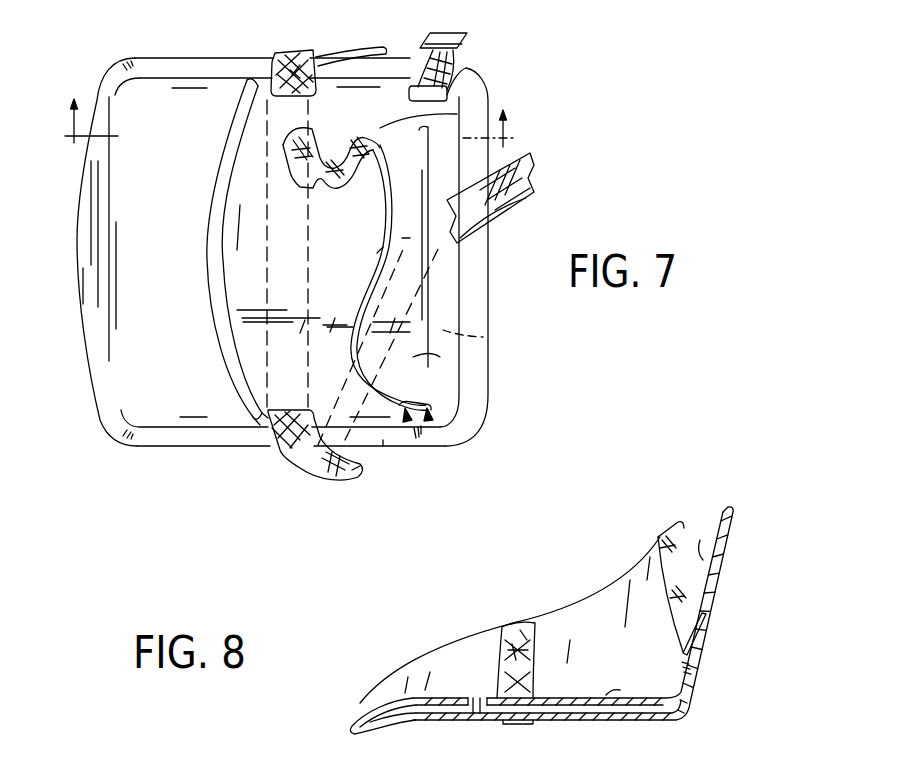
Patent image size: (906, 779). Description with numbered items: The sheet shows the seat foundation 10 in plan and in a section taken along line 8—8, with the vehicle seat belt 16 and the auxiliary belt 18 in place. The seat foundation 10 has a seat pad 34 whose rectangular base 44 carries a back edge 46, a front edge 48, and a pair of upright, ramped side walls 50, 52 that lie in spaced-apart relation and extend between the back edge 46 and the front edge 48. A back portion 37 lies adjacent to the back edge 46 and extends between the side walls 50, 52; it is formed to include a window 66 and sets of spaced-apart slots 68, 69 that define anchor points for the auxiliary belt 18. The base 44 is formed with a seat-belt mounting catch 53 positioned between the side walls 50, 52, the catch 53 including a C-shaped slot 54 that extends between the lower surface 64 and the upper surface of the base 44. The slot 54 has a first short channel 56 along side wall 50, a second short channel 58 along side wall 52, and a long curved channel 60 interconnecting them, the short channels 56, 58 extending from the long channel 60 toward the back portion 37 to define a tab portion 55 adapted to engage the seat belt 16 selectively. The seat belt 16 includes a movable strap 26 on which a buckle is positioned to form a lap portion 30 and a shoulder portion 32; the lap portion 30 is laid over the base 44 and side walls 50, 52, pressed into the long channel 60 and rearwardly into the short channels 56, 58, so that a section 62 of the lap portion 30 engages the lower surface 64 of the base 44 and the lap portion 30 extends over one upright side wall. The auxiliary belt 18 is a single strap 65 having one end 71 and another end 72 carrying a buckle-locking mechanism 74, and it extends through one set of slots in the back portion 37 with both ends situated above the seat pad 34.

In FIG. 7, the seat foundation 10 is at (128, 468).
In FIG. 8, the seat foundation 10 is at (343, 665).
In FIG. 7, the vehicle seat belt 16 is at (338, 490).
In FIG. 7, the auxiliary belt 18 is at (410, 240).
In FIG. 8, the auxiliary belt 18 is at (667, 512).
In FIG. 7, the movable strap 26 is at (290, 60).
In FIG. 8, the movable strap 26 is at (500, 640).
In FIG. 7, the lap portion 30 is at (300, 64).
In FIG. 8, the lap portion 30 is at (533, 603).
In FIG. 7, the shoulder portion 32 is at (533, 183).
In FIG. 7, the seat pad 34 is at (120, 183).
In FIG. 8, the seat pad 34 is at (421, 682).
In FIG. 7, the back portion 37 is at (447, 283).
In FIG. 8, the back portion 37 is at (707, 543).
In FIG. 7, the rectangular base 44 is at (462, 104).
In FIG. 8, the rectangular base 44 is at (606, 695).
In FIG. 7, the back edge 46 is at (415, 357).
In FIG. 8, the back edge 46 is at (687, 697).
In FIG. 7, the front edge 48 is at (91, 235).
In FIG. 8, the front edge 48 is at (363, 700).
In FIG. 7, the upright side wall 50 is at (343, 70).
In FIG. 8, the upright side wall 50 is at (587, 603).
In FIG. 7, the upright side wall 52 is at (383, 440).
In FIG. 7, the seat-belt mounting catch 53 is at (248, 227).
In FIG. 7, the C-shaped slot 54 is at (195, 290).
In FIG. 8, the C-shaped slot 54 is at (472, 725).
In FIG. 7, the tab portion 55 is at (233, 248).
In FIG. 7, the first short channel 56 is at (252, 72).
In FIG. 7, the second short channel 58 is at (243, 438).
In FIG. 7, the long curved channel 60 is at (215, 190).
In FIG. 7, the section of lap portion 62 is at (263, 337).
In FIG. 8, the section of lap portion 62 is at (517, 727).
In FIG. 8, the lower surface 64 is at (577, 722).
In FIG. 7, the single strap 65 is at (377, 253).
In FIG. 8, the single strap 65 is at (673, 570).
In FIG. 8, the window 66 is at (703, 675).
In FIG. 7, the slots 68 is at (455, 95).
In FIG. 7, the slots 69 is at (411, 72).
In FIG. 7, the one end 71 is at (308, 126).
In FIG. 7, the another end 72 is at (460, 55).
In FIG. 7, the buckle-locking mechanism 74 is at (462, 40).
In FIG. 7, the section line 8— 8 is at (285, 126).